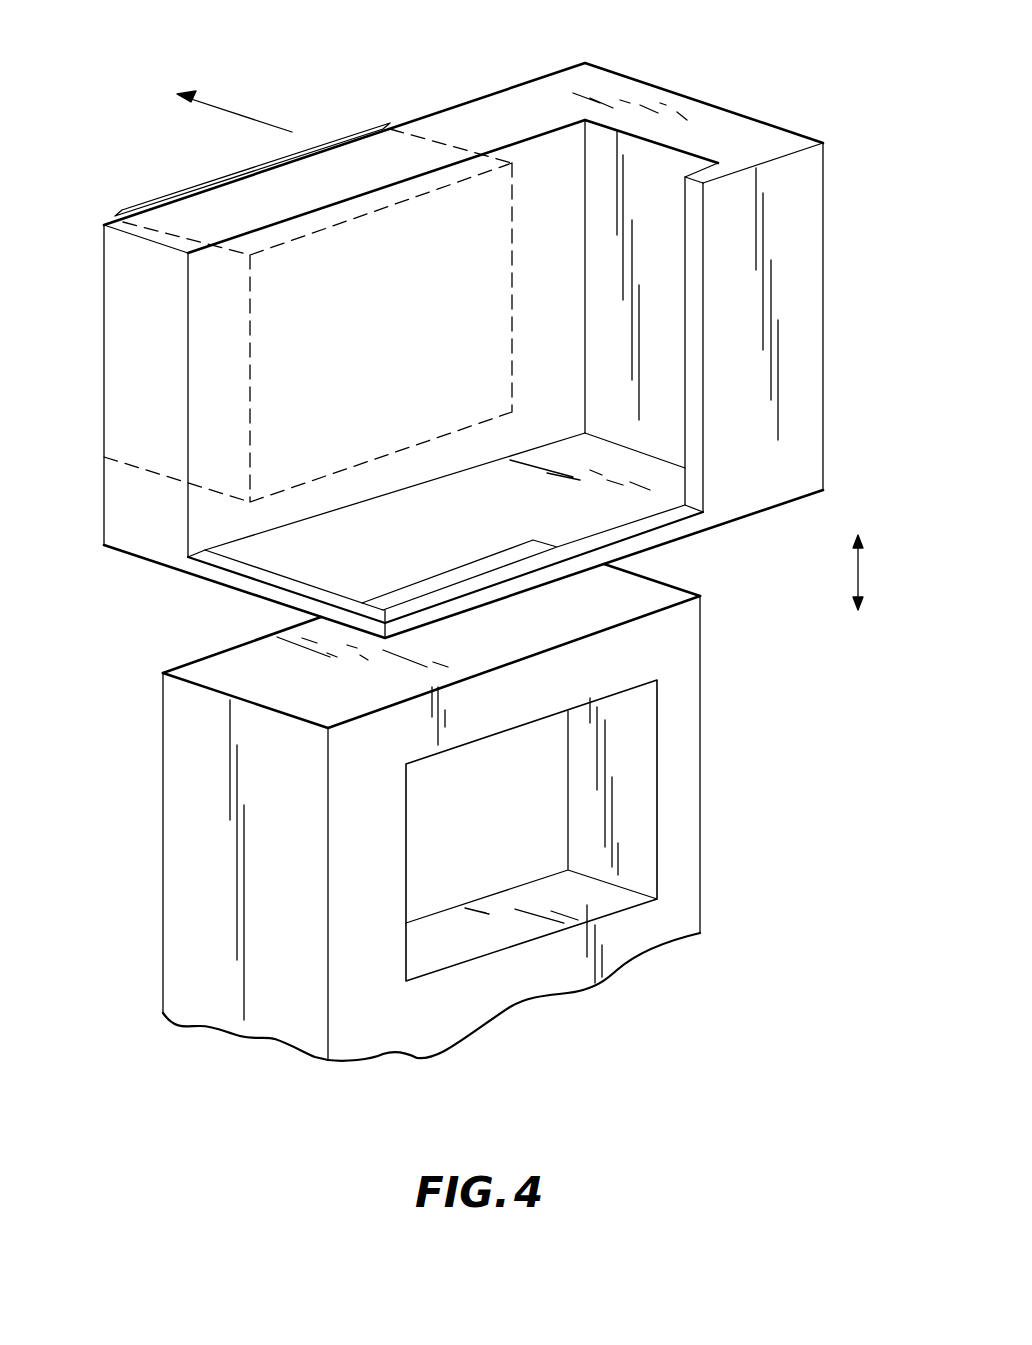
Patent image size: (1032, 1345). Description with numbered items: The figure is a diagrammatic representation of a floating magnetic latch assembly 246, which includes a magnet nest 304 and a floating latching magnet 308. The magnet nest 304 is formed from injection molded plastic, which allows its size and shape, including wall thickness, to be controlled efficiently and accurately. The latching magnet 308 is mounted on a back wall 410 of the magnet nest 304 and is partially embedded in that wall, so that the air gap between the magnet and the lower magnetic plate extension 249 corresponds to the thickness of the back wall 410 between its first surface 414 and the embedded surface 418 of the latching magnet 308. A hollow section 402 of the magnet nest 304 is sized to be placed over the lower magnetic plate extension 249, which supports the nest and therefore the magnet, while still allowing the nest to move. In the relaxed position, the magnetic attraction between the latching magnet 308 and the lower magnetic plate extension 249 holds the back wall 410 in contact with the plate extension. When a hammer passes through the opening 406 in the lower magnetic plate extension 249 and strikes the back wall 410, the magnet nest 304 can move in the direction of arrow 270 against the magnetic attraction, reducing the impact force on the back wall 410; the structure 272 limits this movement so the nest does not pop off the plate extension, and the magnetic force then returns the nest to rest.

The floating magnetic latch assembly 246 is at (783, 72).
The arrow 270 is at (232, 107).
The floating latching magnet 308 is at (383, 128).
The structure 272 is at (720, 168).
The magnet nest 304 is at (800, 343).
The back wall 410 is at (200, 443).
The hollow section 402 is at (289, 555).
The embedded surface 418 is at (380, 442).
The first surface 414 is at (489, 450).
The lower magnetic plate extension 249 is at (684, 790).
The opening 406 is at (485, 868).